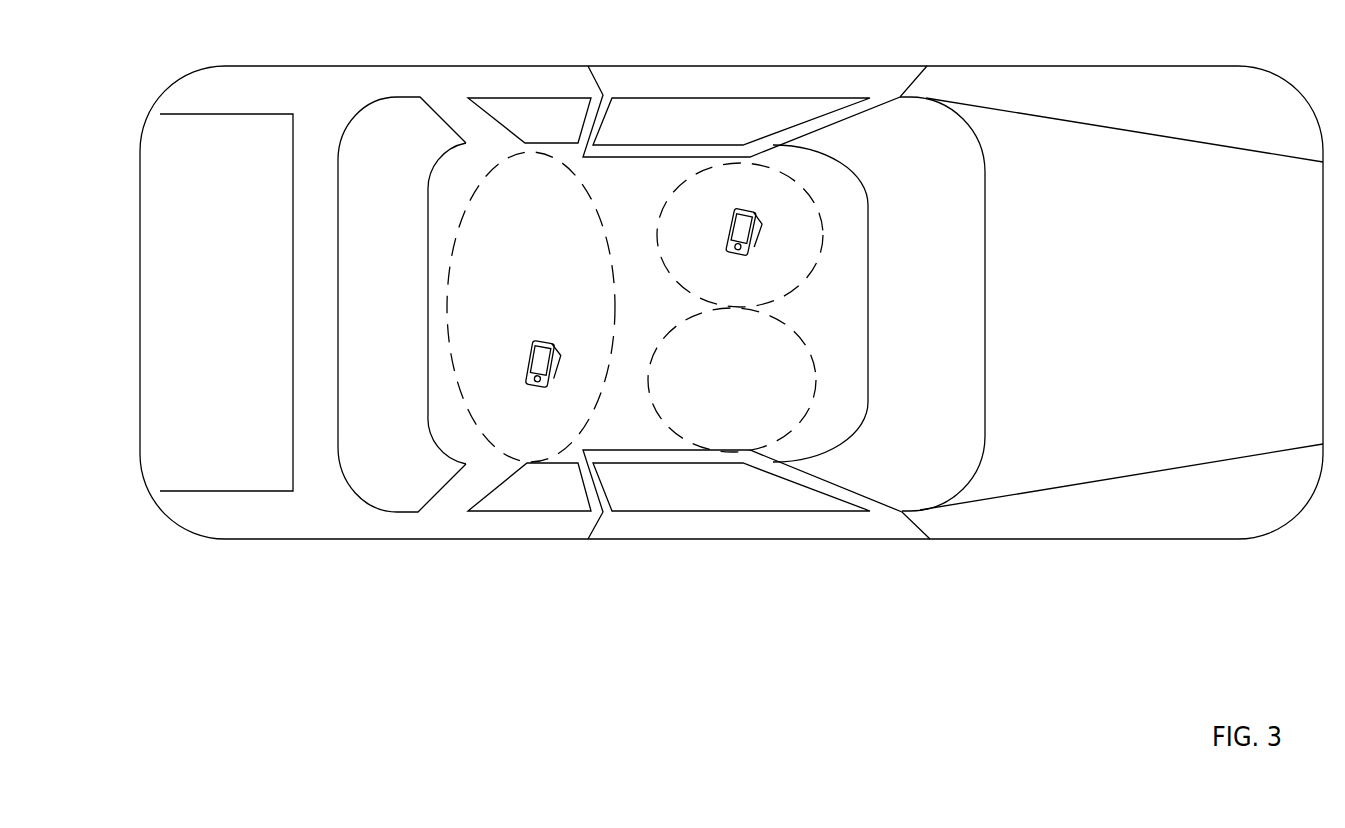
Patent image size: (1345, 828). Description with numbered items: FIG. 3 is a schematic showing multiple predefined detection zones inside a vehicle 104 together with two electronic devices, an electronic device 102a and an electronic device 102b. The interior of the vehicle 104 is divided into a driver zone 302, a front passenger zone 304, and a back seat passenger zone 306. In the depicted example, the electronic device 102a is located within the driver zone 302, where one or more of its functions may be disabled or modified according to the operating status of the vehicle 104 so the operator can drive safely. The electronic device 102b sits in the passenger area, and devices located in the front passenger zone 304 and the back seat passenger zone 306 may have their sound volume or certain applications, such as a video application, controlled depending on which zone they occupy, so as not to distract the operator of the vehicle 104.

The vehicle 104 is at (1040, 66).
The back seat passenger zone 306 is at (599, 212).
The driver zone 302 is at (820, 264).
The front passenger zone 304 is at (818, 388).
The electronic device 102a is at (752, 224).
The electronic device 102b is at (528, 343).